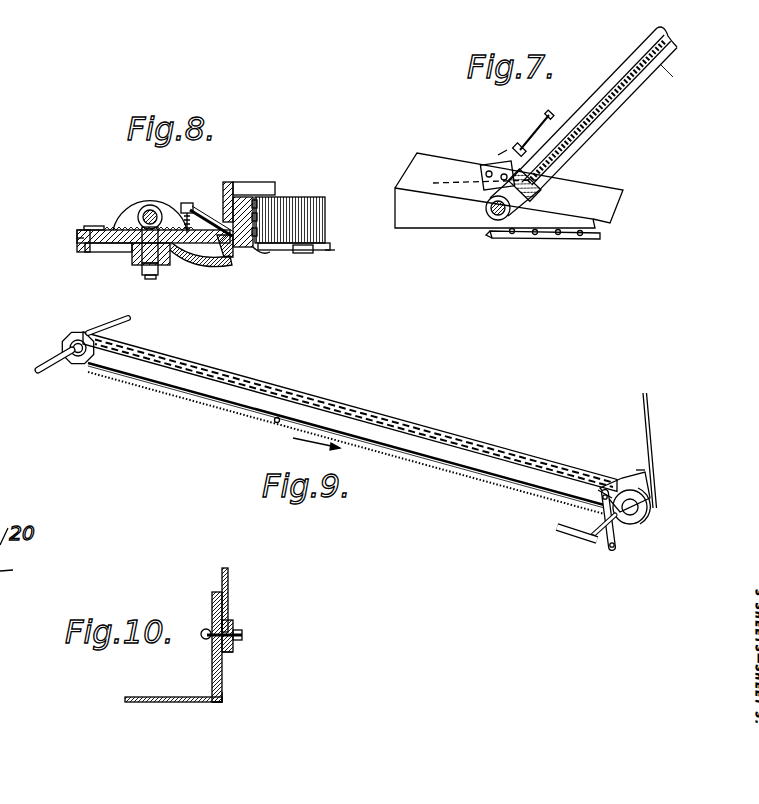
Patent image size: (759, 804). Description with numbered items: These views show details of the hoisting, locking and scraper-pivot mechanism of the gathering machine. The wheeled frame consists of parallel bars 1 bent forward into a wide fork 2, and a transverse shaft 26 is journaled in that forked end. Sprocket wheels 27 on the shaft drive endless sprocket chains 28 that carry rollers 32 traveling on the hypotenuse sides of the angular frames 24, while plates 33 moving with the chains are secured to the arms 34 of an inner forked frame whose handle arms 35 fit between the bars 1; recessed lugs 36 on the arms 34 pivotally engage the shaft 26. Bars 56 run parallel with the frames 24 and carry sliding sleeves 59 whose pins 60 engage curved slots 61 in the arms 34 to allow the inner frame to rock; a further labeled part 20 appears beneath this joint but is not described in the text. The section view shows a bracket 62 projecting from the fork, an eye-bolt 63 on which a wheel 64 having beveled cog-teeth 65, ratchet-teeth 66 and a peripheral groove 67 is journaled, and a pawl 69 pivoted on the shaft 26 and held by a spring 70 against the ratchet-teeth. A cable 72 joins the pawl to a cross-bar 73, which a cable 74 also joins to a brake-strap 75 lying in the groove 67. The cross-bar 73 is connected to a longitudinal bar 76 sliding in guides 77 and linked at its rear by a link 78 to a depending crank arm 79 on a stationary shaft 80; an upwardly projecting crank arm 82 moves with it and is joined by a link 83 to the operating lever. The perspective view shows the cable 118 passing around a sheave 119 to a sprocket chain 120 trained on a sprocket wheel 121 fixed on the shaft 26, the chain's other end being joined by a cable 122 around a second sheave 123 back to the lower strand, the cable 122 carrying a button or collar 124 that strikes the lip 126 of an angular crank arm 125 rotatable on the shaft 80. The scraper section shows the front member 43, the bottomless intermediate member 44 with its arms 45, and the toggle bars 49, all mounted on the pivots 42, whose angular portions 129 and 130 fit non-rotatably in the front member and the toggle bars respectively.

In FIG. 8, the parallel bars 1 is at (291, 203).
In FIG. 7, the fork 2 is at (423, 224).
In FIG. 8, the fork 2 is at (245, 197).
In FIG. 7, the bar 20 is at (550, 240).
In FIG. 7, the angular frames 24 is at (650, 45).
In FIG. 7, the transverse shaft 26 is at (488, 220).
In FIG. 8, the transverse shaft 26 is at (151, 205).
In FIG. 9, the transverse shaft 26 is at (37, 372).
In FIG. 7, the sprocket wheels 27 is at (505, 239).
In FIG. 7, the sprocket chains 28 is at (547, 117).
In FIG. 7, the rollers 32 is at (500, 160).
In FIG. 7, the plates 33 is at (487, 160).
In FIG. 7, the arms 34 is at (425, 157).
In FIG. 8, the arms 34 is at (230, 182).
In FIG. 10, the handle arms 35 is at (233, 620).
In FIG. 7, the recessed lugs 36 is at (557, 214).
In FIG. 10, the pivots 42 is at (242, 635).
In FIG. 10, the front member 43 is at (143, 697).
In FIG. 10, the intermediate member 44 is at (223, 702).
In FIG. 10, the arms 45 is at (223, 685).
In FIG. 10, the toggle bars 49 is at (228, 573).
In FIG. 7, the bars 56 is at (645, 72).
In FIG. 7, the sleeves 59 is at (516, 158).
In FIG. 7, the pins 60 is at (540, 180).
In FIG. 7, the slots 61 is at (537, 191).
In FIG. 8, the bracket 62 is at (257, 251).
In FIG. 8, the eye-bolt 63 is at (135, 258).
In FIG. 8, the wheel 64 is at (90, 249).
In FIG. 8, the beveled cog-teeth 65 is at (82, 232).
In FIG. 8, the ratchet-teeth 66 is at (98, 228).
In FIG. 8, the peripheral groove 67 is at (240, 262).
In FIG. 8, the pawl 69 is at (118, 226).
In FIG. 8, the spring 70 is at (187, 202).
In FIG. 8, the cable 72 is at (203, 211).
In FIG. 8, the cross-bar 73 is at (300, 253).
In FIG. 8, the cable 74 is at (228, 242).
In FIG. 8, the brake-strap 75 is at (78, 240).
In FIG. 8, the longitudinal bar 76 is at (320, 245).
In FIG. 8, the guides 77 is at (330, 252).
In FIG. 9, the link 78 is at (567, 533).
In FIG. 9, the depending crank arm 79 is at (620, 542).
In FIG. 9, the stationary shaft 80 is at (600, 538).
In FIG. 9, the upwardly-projecting crank arm 82 is at (607, 503).
In FIG. 9, the link 83 is at (607, 488).
In FIG. 9, the cable 118 is at (643, 400).
In FIG. 9, the sheave 119 is at (641, 487).
In FIG. 9, the sprocket chain 120 is at (117, 378).
In FIG. 9, the sprocket wheel 121 is at (60, 343).
In FIG. 9, the cable 122 is at (565, 467).
In FIG. 9, the second sheave 123 is at (638, 518).
In FIG. 9, the button or collar 124 is at (276, 422).
In FIG. 9, the angular crank arm 125 is at (634, 470).
In FIG. 9, the lip 126 is at (634, 478).
In FIG. 10, the angular portion 129 is at (208, 633).
In FIG. 10, the angular portion 130 is at (227, 652).